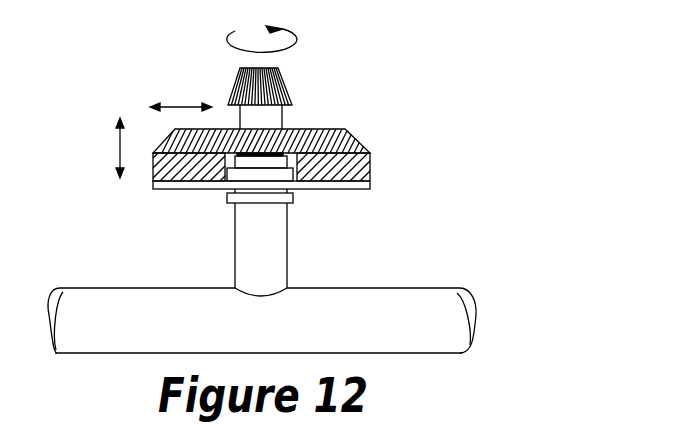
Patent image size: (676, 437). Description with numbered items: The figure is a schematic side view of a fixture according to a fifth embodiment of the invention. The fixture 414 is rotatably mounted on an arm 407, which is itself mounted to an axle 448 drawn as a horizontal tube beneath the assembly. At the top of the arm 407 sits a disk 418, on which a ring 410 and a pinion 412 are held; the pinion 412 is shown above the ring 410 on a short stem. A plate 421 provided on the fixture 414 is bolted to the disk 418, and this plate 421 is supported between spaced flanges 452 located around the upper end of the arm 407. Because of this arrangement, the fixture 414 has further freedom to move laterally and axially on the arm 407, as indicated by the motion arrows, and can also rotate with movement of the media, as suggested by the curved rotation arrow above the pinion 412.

The pinion 412 is at (284, 79).
The ring 410 is at (390, 128).
The fixture 414 is at (422, 147).
The disk 418 is at (152, 163).
The plate 421 is at (358, 190).
The spaced flanges 452 is at (242, 173).
The arm 407 is at (287, 245).
The axle 448 is at (428, 288).